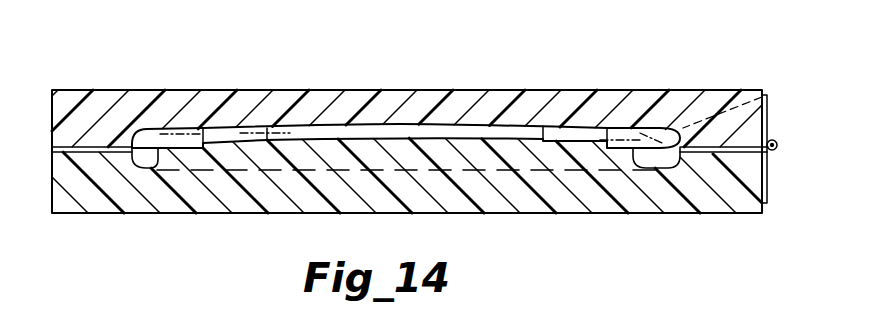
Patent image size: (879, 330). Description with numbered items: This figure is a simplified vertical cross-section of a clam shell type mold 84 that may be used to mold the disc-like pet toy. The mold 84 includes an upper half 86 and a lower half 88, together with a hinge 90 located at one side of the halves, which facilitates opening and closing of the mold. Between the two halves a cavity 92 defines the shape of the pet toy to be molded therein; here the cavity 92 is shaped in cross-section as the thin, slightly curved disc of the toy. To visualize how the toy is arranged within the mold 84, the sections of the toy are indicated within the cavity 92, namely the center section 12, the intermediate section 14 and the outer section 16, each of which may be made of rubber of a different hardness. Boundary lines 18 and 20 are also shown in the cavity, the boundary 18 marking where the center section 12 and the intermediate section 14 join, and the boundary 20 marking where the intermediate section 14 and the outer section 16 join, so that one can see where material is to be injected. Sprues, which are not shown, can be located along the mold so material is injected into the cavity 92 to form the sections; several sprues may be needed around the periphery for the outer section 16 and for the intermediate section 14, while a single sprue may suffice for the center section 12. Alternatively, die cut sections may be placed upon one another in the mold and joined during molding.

The mold 84 is at (91, 67).
The upper half 86 is at (143, 107).
The lower half 88 is at (83, 200).
The hinge 90 is at (773, 150).
The cavity 92 is at (410, 133).
The center section 12 is at (478, 133).
The intermediate section 14 is at (263, 127).
The outer section 16 is at (163, 132).
The boundary 18 is at (292, 125).
The boundary 20 is at (207, 128).